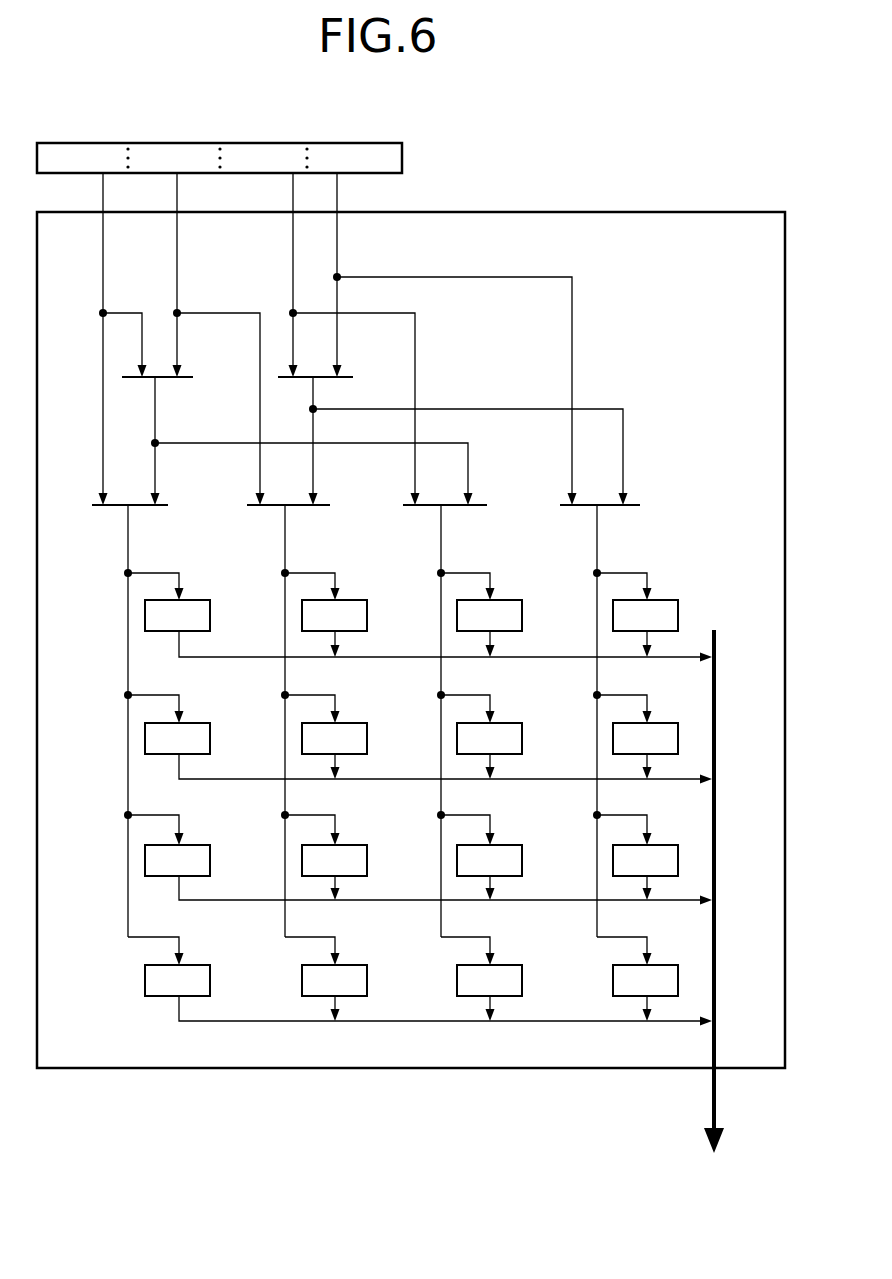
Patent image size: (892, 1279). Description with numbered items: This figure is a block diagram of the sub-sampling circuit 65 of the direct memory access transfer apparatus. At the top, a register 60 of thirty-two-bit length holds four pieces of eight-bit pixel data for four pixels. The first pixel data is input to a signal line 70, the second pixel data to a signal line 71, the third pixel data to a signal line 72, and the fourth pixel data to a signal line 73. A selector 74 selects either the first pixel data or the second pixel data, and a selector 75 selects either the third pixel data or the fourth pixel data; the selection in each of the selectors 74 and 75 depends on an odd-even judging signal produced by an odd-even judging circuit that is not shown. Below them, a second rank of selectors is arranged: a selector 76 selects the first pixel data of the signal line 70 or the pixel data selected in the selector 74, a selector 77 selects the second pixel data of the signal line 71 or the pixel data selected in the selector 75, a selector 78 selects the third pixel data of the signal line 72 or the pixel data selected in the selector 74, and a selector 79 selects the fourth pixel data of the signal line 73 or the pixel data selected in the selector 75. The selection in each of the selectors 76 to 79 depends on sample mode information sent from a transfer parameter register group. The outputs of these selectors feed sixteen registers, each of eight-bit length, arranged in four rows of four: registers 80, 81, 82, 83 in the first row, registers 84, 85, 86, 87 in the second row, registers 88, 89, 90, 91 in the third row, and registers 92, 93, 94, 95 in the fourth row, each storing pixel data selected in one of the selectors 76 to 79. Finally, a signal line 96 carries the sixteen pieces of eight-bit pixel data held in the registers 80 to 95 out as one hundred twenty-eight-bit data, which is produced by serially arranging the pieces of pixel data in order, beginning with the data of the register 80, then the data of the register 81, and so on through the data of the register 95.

The register 60 is at (405, 157).
The sub-sampling circuit 65 is at (713, 210).
The signal line 70 is at (106, 248).
The signal line 71 is at (180, 248).
The signal line 72 is at (288, 282).
The signal line 73 is at (340, 248).
The selector 74 is at (193, 374).
The selector 75 is at (345, 374).
The selector 76 is at (163, 502).
The selector 77 is at (320, 502).
The selector 78 is at (487, 502).
The selector 79 is at (640, 502).
The register 80 is at (200, 594).
The register 81 is at (356, 594).
The register 82 is at (511, 594).
The register 83 is at (668, 594).
The register 84 is at (200, 716).
The register 85 is at (356, 716).
The register 86 is at (511, 716).
The register 87 is at (668, 716).
The register 88 is at (200, 838).
The register 89 is at (356, 838).
The register 90 is at (511, 838).
The register 91 is at (668, 838).
The register 92 is at (200, 958).
The register 93 is at (356, 958).
The register 94 is at (511, 958).
The register 95 is at (668, 958).
The signal line 96 is at (716, 628).